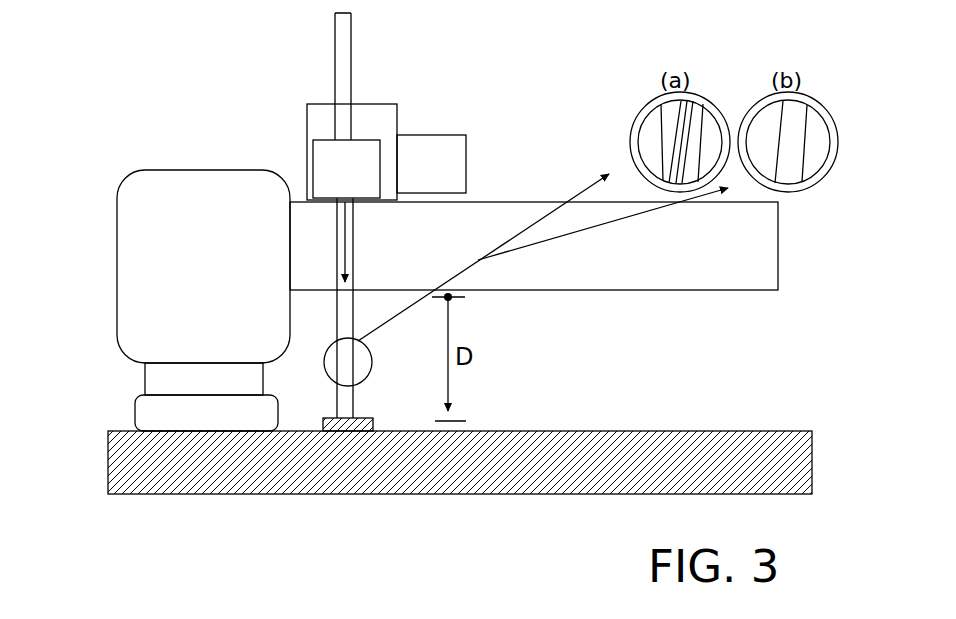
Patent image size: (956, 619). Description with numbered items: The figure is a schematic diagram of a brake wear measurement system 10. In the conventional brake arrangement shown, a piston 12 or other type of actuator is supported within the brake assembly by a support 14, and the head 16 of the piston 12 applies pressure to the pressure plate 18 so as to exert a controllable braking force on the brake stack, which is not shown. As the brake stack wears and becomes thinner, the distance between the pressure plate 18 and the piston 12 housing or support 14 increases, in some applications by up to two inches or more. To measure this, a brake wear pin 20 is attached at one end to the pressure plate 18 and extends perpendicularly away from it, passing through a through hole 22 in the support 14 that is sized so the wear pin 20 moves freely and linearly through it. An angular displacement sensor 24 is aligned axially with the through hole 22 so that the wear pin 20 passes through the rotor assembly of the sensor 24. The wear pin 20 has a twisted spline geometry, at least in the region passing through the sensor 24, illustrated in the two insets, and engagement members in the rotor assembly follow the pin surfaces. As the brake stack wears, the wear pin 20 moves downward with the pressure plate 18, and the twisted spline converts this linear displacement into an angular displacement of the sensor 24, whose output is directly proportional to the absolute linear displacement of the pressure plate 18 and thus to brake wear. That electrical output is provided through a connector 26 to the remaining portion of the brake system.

The brake wear measurement system 10 is at (185, 130).
The piston 12 is at (211, 289).
The support 14 is at (759, 250).
The head 16 is at (148, 411).
The pressure plate 18 is at (226, 466).
The brake wear pin 20 is at (345, 58).
The through hole 22 is at (338, 231).
The angular displacement sensor 24 is at (378, 139).
The connector 26 is at (453, 155).